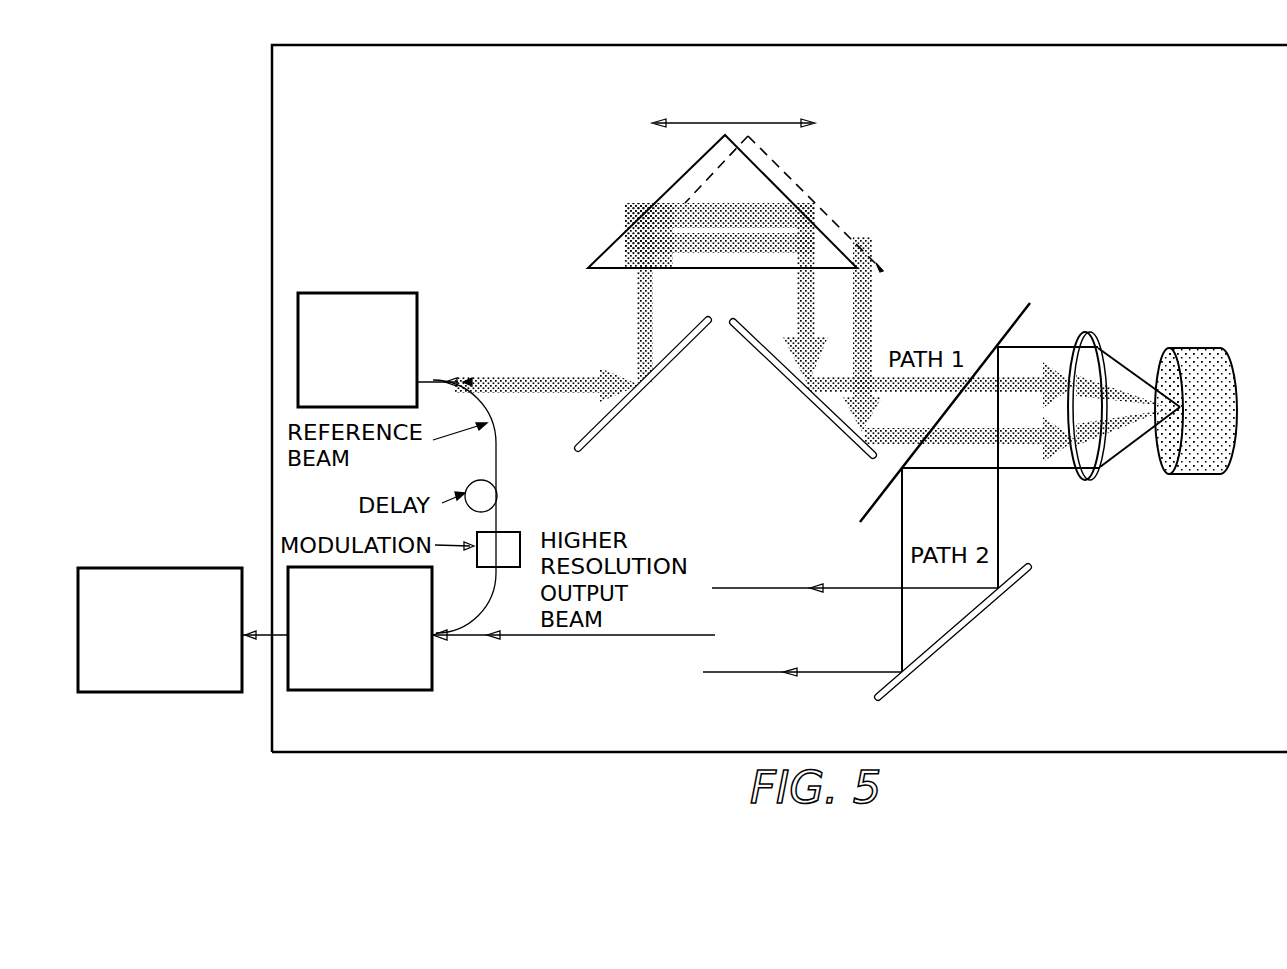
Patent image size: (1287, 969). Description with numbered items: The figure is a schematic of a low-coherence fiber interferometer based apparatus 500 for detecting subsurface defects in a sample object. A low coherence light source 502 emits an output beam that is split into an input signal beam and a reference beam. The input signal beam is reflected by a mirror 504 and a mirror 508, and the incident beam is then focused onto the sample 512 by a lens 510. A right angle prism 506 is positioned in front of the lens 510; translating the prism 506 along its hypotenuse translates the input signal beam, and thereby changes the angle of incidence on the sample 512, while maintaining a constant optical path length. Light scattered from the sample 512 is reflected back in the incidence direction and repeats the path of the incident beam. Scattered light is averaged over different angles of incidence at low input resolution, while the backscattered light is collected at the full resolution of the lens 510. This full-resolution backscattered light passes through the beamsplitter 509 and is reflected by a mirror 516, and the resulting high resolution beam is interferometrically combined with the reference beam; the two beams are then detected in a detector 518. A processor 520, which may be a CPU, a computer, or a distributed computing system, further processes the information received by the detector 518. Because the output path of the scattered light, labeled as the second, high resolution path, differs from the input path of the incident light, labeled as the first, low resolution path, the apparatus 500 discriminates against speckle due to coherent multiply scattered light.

The apparatus 500 is at (1171, 92).
The low coherence light source 502 is at (340, 292).
The mirror 504 is at (606, 421).
The right angle prism 506 is at (615, 243).
The mirror 508 is at (800, 391).
The beamsplitter 509 is at (1010, 333).
The lens 510 is at (1100, 467).
The sample 512 is at (1223, 476).
The mirror 516 is at (1027, 567).
The detector 518 is at (432, 670).
The processor 520 is at (155, 567).